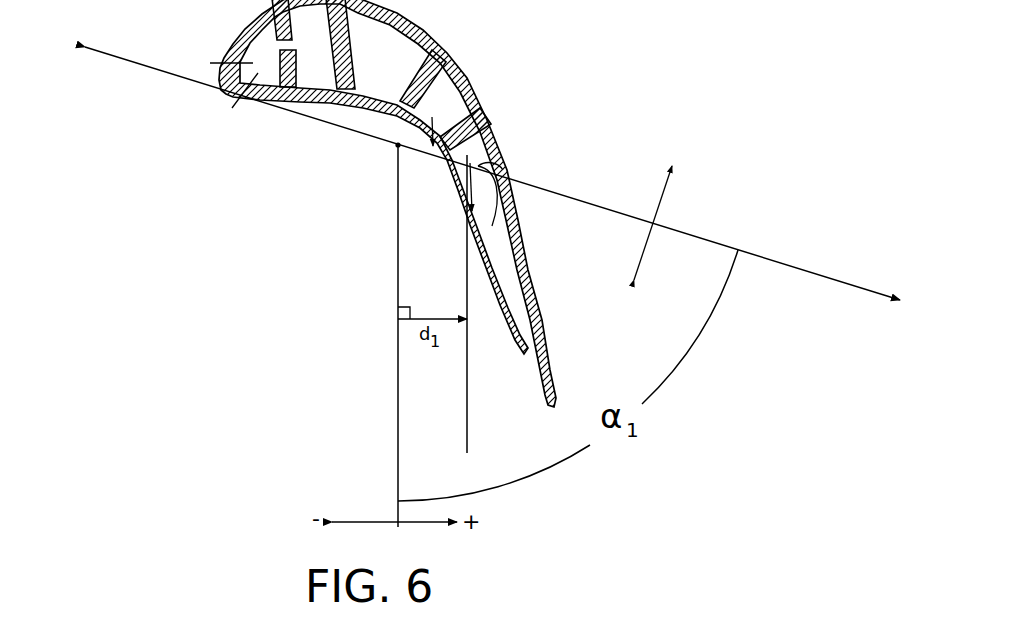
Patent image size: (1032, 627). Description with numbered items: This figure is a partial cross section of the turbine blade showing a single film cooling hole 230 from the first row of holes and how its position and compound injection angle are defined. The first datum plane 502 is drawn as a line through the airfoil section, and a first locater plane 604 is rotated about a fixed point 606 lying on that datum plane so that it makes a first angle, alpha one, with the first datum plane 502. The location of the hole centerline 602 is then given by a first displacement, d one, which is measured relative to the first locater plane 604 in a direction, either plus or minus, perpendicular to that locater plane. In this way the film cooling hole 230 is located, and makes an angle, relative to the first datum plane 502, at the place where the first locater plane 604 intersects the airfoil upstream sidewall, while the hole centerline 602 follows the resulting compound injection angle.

The film cooling hole 230 is at (503, 163).
The first datum plane 502 is at (725, 246).
The hole centerline 602 is at (505, 219).
The first locater plane 604 is at (398, 376).
The fixed point 606 is at (398, 146).